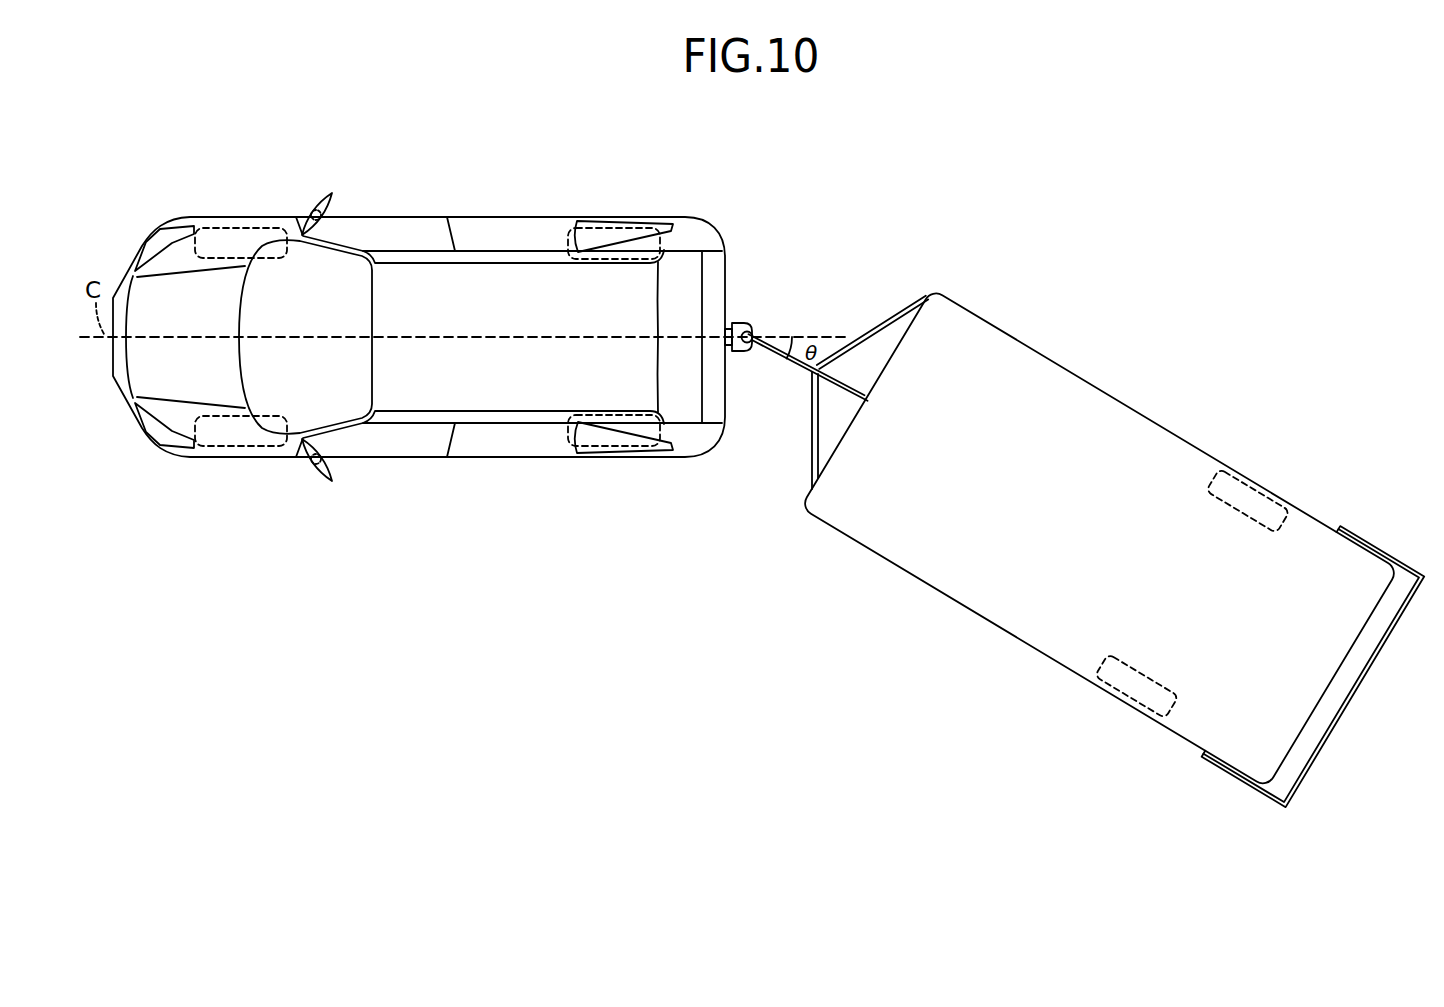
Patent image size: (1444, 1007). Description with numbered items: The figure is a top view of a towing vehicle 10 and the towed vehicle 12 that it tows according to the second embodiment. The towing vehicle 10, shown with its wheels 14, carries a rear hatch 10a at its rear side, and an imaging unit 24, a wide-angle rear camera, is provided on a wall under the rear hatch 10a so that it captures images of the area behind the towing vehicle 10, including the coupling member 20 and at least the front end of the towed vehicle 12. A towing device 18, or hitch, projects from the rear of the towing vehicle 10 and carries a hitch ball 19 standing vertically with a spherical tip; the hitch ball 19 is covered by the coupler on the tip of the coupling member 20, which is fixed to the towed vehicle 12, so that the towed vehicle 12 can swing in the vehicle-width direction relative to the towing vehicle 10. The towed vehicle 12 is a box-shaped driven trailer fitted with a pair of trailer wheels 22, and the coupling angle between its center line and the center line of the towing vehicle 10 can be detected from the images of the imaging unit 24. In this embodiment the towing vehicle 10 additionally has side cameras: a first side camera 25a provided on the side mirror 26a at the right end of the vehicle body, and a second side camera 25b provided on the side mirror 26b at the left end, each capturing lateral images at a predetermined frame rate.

The towing vehicle 10 is at (487, 312).
The rear hatch 10a is at (690, 284).
The towed vehicle 12 is at (1096, 412).
The wheels 14 is at (613, 483).
The towing device 18 is at (742, 353).
The hitch ball 19 is at (756, 332).
The coupling member 20 is at (792, 366).
The trailer wheels 22 is at (1260, 500).
The imaging unit 24 is at (744, 324).
The first side camera 25a is at (319, 205).
The second side camera 25b is at (319, 469).
The side mirror 26a is at (334, 200).
The side mirror 26b is at (334, 474).